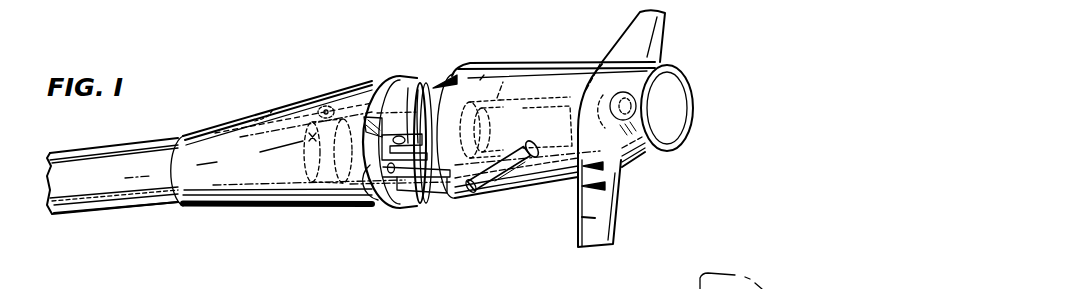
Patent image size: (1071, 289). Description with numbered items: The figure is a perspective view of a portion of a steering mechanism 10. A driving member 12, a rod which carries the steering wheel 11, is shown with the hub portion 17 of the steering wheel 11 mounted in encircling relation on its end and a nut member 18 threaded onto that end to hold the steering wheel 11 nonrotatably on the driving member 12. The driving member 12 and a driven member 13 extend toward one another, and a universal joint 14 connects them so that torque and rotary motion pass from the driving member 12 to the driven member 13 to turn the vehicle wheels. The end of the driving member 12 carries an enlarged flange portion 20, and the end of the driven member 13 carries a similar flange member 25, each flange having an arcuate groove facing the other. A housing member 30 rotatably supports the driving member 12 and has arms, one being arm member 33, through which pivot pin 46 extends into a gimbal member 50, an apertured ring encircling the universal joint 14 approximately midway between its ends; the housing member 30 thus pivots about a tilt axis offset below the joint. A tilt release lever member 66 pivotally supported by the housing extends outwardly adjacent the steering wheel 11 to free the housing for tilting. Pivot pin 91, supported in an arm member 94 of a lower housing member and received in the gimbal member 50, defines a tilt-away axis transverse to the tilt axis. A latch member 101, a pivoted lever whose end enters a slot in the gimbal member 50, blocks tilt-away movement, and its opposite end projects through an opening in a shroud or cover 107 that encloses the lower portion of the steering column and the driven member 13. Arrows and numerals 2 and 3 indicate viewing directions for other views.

The cable / line 2 is at (140, 177).
The direction arrow of movement 3 is at (262, 163).
The steering mechanism 10 is at (544, 99).
The steering wheel 11 is at (607, 200).
The driving member 12 is at (527, 110).
The driven member 13 is at (307, 110).
The universal joint 14 is at (380, 112).
The hub portion 17 is at (662, 45).
The nut member 18 is at (690, 75).
The flange portion 20 is at (487, 53).
The flange member 25 is at (330, 193).
The housing member 30 is at (525, 190).
The arm member 33 is at (404, 193).
The pivot pin 46 is at (386, 172).
The gimbal member 50 is at (420, 88).
The tilt release lever member 66 is at (500, 183).
The pivot pin 91 is at (405, 135).
The arm member 94 is at (367, 132).
The latch member 101 is at (267, 109).
The shroud or cover 107 is at (222, 128).